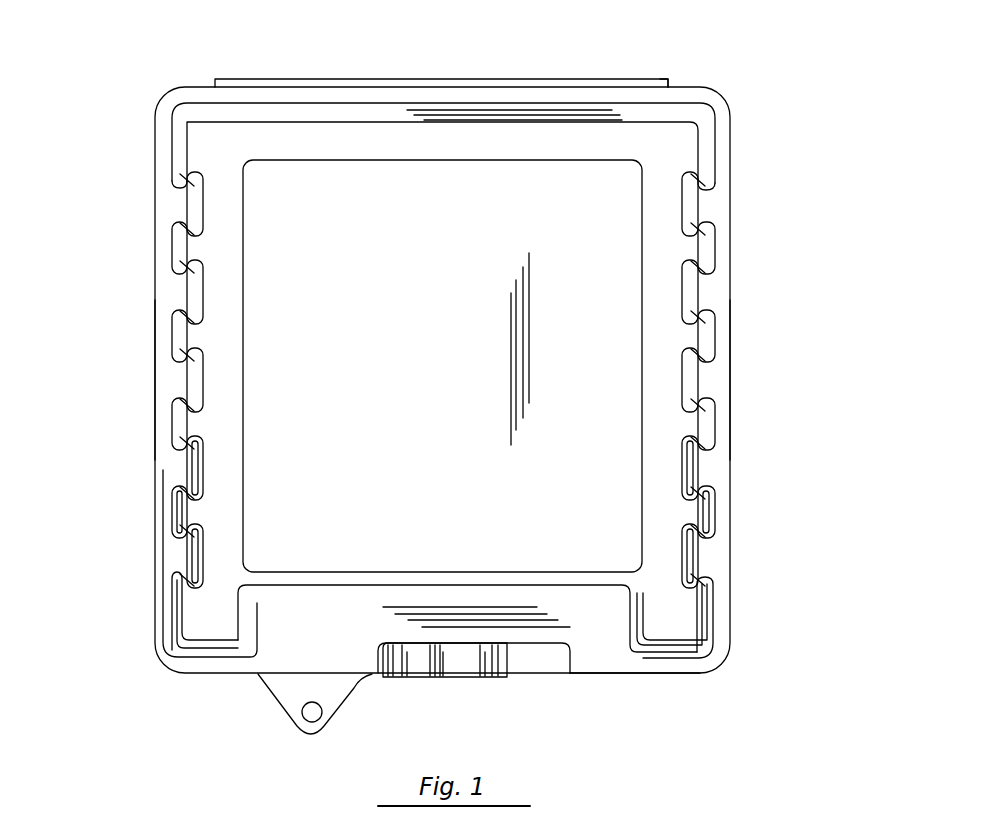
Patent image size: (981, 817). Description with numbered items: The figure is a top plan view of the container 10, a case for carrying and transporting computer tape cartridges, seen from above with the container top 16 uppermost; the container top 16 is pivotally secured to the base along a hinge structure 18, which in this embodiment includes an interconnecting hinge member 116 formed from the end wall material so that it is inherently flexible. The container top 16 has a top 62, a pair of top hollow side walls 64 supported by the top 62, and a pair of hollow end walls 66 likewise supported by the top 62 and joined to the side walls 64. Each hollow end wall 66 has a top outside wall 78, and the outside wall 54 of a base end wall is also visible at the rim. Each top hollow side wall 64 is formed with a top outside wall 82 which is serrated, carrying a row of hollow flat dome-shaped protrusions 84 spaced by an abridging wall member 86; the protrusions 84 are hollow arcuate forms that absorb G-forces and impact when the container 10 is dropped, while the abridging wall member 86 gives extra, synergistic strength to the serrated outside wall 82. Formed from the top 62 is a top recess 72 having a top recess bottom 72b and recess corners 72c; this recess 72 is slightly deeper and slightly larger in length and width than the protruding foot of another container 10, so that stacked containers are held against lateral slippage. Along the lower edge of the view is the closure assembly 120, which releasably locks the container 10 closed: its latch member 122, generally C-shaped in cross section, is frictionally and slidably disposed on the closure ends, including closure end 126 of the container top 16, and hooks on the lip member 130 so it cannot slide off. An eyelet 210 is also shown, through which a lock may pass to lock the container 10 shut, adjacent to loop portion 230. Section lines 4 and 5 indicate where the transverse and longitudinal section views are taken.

The container 10 is at (733, 72).
The container top 16 is at (230, 428).
The hinge structure 18 is at (568, 80).
The outside wall 54 is at (677, 103).
The top 62 is at (663, 527).
The top hollow side walls 64 is at (183, 283).
The hollow end walls 66 is at (362, 97).
The top recess 72 is at (633, 563).
The top recess bottom 72b is at (610, 553).
The recess corners 72c is at (640, 572).
The top outside wall 78 is at (621, 676).
The top outside wall 82 is at (155, 392).
The hollow flat dome-shaped protrusions 84 is at (174, 515).
The abridging wall member 86 is at (188, 468).
The interconnecting hinge member 116 is at (673, 82).
The closure assembly 120 is at (457, 680).
The latch member 122 is at (412, 662).
The closure end 126 is at (522, 655).
The lip member 130 is at (542, 668).
The eyelet 210 is at (313, 722).
The hanger loop 230 is at (293, 692).
The section line 4- 4 is at (150, 336).
The section line 5- 5 is at (481, 74).